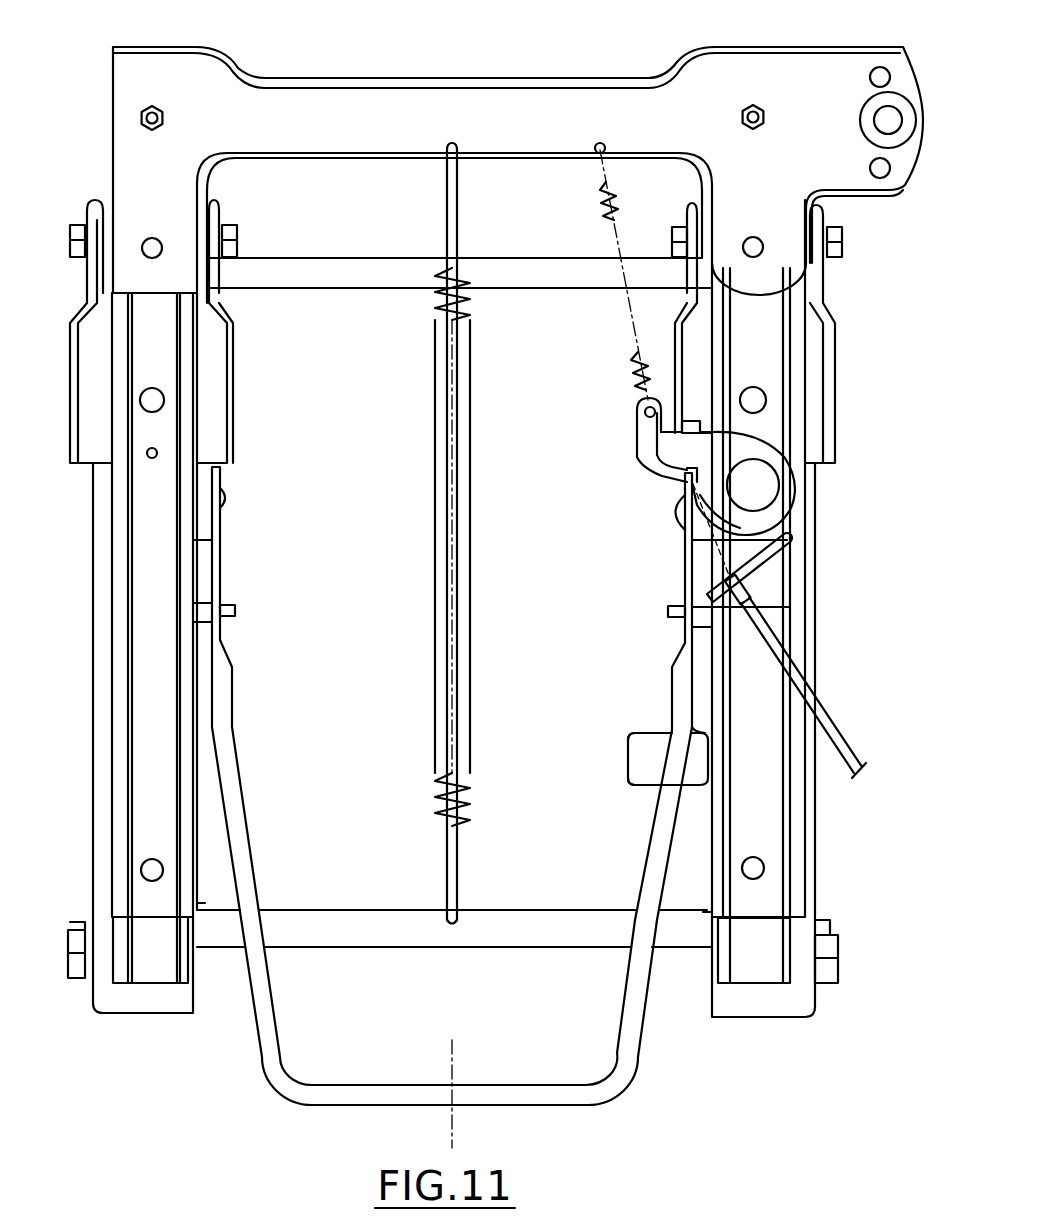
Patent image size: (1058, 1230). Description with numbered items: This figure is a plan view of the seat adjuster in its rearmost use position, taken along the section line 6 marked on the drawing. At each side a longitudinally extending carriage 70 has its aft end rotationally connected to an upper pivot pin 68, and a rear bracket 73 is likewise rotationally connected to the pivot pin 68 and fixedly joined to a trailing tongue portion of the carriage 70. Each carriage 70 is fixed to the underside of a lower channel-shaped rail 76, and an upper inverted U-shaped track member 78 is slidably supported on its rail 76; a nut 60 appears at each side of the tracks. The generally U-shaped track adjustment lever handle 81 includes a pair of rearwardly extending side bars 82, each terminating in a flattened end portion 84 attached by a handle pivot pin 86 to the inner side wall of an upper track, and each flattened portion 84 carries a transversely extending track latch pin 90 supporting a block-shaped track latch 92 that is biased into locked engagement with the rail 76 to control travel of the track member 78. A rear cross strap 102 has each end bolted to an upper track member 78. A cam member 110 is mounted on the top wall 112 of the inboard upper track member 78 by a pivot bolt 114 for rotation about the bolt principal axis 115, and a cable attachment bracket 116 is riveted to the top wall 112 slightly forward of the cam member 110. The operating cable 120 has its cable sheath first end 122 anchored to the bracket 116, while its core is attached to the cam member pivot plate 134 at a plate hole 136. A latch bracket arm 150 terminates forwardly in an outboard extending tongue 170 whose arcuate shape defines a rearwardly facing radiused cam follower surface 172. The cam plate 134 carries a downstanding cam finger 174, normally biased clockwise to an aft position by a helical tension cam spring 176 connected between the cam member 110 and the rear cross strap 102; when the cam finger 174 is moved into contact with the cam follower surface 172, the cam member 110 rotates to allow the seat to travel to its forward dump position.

The section line 6- 6 is at (441, 207).
The nut 60 is at (75, 925).
The upper pivot pin 68 is at (73, 226).
The carriage 70 is at (157, 1017).
The rear bracket 73 is at (237, 355).
The lower channel-shaped rail 76 is at (112, 968).
The upper inverted U-shaped track member 78 is at (202, 902).
The track adjustment lever handle 81 is at (362, 1109).
The side bars 82 is at (277, 1012).
The flattened end portion 84 is at (222, 563).
The handle pivot pin 86 is at (232, 605).
The track latch pin 90 is at (226, 500).
The track latch 92 is at (205, 528).
The rear cross strap 102 is at (503, 92).
The cam member 110 is at (630, 440).
The top wall 112 is at (148, 820).
The pivot bolt 114 is at (789, 490).
The bolt principal axis 115 is at (737, 505).
The cable attachment bracket 116 is at (760, 574).
The operating cable 120 is at (843, 724).
The cable sheath first end 122 is at (790, 538).
The cam member pivot plate 134 is at (791, 478).
The plate hole 136 is at (672, 482).
The latch bracket arm 150 is at (645, 792).
The tongue 170 is at (628, 763).
The cam follower surface 172 is at (633, 746).
The cam finger 174 is at (642, 408).
The cam spring 176 is at (634, 346).